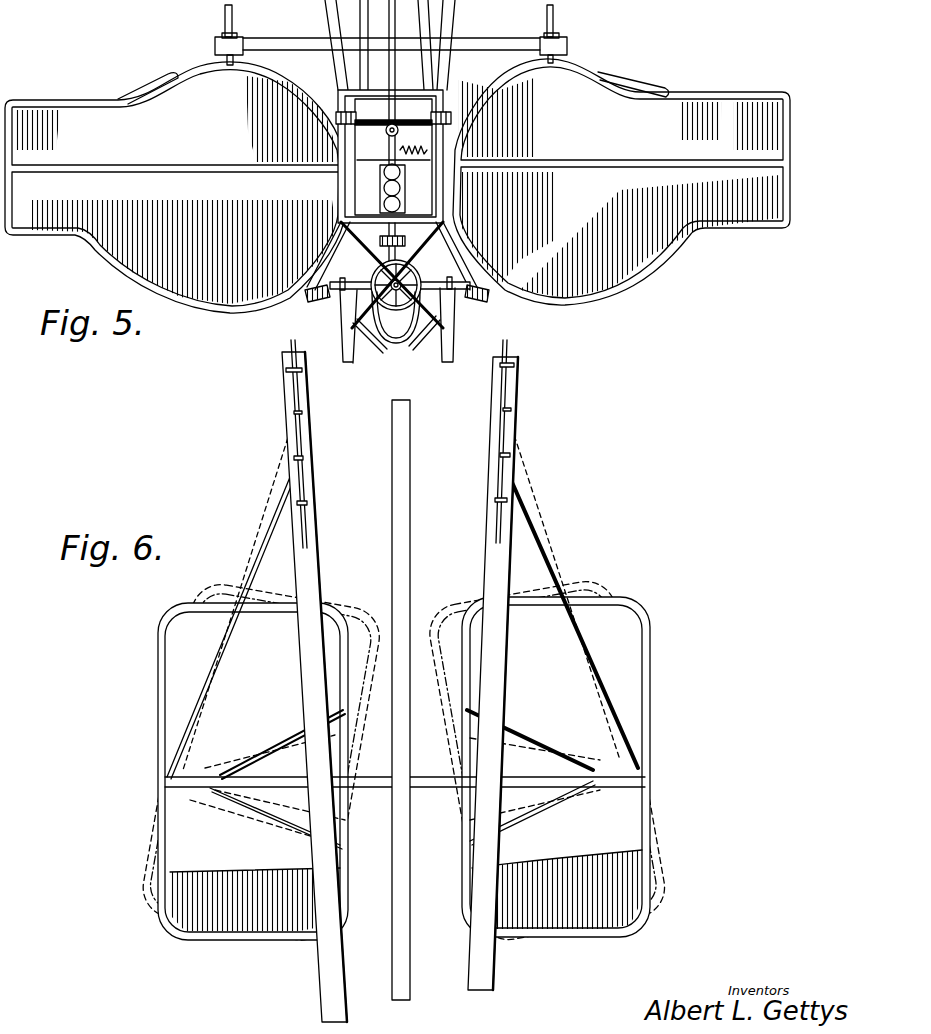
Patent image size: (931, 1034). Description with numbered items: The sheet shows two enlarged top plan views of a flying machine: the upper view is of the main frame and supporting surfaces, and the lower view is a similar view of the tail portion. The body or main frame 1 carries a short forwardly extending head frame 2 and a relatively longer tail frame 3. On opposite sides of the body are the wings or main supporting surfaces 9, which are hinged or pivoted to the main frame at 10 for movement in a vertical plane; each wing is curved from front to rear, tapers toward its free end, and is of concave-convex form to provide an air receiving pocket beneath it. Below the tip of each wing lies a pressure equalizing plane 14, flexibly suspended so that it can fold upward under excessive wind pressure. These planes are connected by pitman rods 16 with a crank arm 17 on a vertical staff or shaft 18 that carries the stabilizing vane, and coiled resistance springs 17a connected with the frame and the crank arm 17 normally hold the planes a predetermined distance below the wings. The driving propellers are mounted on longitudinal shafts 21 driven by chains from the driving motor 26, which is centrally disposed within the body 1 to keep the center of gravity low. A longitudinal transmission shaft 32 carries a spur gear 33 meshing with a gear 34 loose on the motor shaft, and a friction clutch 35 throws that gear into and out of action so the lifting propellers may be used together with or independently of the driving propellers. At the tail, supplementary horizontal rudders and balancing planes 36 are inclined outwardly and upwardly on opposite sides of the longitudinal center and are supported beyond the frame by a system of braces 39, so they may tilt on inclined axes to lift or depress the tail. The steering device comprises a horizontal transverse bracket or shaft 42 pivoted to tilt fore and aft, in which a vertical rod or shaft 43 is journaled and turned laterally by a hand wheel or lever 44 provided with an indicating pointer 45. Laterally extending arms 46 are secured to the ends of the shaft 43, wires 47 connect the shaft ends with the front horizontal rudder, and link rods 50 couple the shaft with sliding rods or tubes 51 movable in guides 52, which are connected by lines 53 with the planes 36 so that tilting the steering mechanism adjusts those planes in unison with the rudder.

In FIG. 5, the body or main frame 1 is at (470, 25).
In FIG. 5, the head frame 2 is at (380, 48).
In FIG. 6, the tail frame 3 is at (400, 687).
In FIG. 5, the wings or main supporting surfaces 9 is at (397, 186).
In FIG. 6, the wings or main supporting surfaces 9 is at (263, 567).
In FIG. 5, the wing pivot 10 is at (258, 325).
In FIG. 5, the pressure equalizing plane 14 is at (144, 93).
In FIG. 5, the pitman rods 16 is at (340, 150).
In FIG. 5, the crank arm 17 is at (402, 150).
In FIG. 5, the coiled resistance springs 17a is at (407, 188).
In FIG. 5, the vertical staff or shaft 18 is at (400, 124).
In FIG. 5, the longitudinal shafts 21 is at (233, 20).
In FIG. 5, the driving motor 26 is at (407, 194).
In FIG. 5, the transmission shaft 32 is at (397, 62).
In FIG. 5, the spur gear 33 is at (393, 135).
In FIG. 5, the gear 34 is at (388, 238).
In FIG. 5, the friction clutch 35 is at (371, 258).
In FIG. 6, the supplementary horizontal rudders and balancing planes 36 is at (158, 705).
In FIG. 6, the braces 39 is at (278, 740).
In FIG. 5, the horizontal transverse bracket or shaft 42 is at (348, 300).
In FIG. 5, the vertical rod or shaft 43 is at (405, 283).
In FIG. 5, the hand wheel or lever 44 is at (396, 317).
In FIG. 5, the indicating pointer 45 is at (393, 275).
In FIG. 5, the laterally extending arms 46 is at (367, 281).
In FIG. 5, the wires 47 is at (447, 242).
In FIG. 5, the link rods 50 is at (440, 315).
In FIG. 6, the sliding rods or tubes 51 is at (305, 442).
In FIG. 6, the guides 52 is at (307, 503).
In FIG. 6, the lines 53 is at (265, 521).